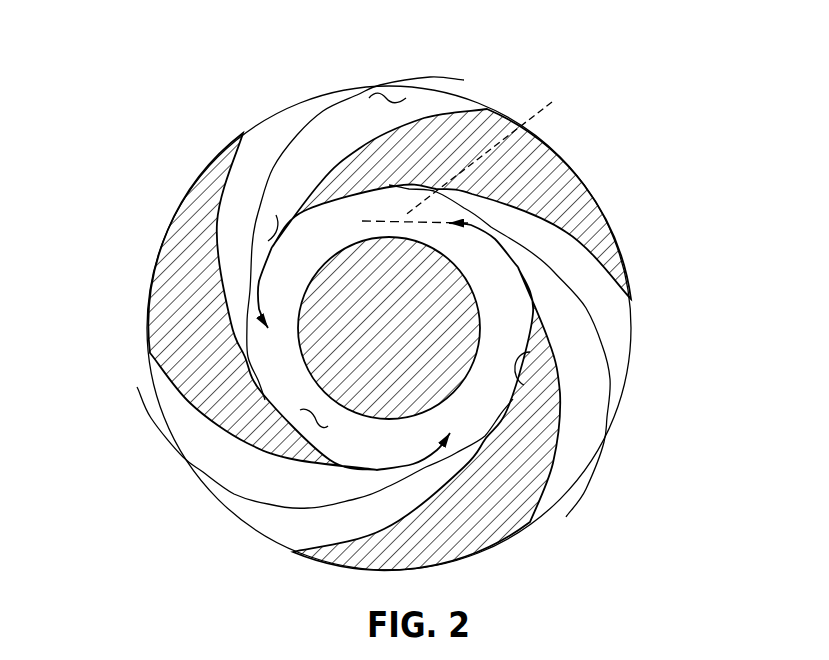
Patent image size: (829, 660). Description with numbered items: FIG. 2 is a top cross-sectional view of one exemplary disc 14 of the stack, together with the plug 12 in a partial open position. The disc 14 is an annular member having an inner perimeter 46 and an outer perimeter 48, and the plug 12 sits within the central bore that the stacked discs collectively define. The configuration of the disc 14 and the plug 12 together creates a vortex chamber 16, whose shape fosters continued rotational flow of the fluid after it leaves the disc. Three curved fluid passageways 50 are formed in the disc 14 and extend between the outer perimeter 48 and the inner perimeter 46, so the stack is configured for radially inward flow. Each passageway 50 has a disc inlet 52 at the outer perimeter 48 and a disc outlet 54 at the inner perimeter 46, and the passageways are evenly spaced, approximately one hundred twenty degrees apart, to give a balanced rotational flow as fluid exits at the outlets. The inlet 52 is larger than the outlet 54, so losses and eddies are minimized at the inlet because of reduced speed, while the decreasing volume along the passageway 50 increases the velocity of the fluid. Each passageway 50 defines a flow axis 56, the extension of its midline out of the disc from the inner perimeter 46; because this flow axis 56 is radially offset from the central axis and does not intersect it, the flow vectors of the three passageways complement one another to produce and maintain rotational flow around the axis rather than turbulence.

The plug 12 is at (336, 362).
The disc 14 is at (567, 164).
The vortex chamber 16 is at (306, 422).
The inner perimeter 46 is at (527, 354).
The outer perimeter 48 is at (153, 279).
The fluid passageway 50 is at (272, 126).
The disc inlet 52 is at (388, 96).
The disc outlet 54 is at (270, 228).
The flow axis 56 is at (473, 152).